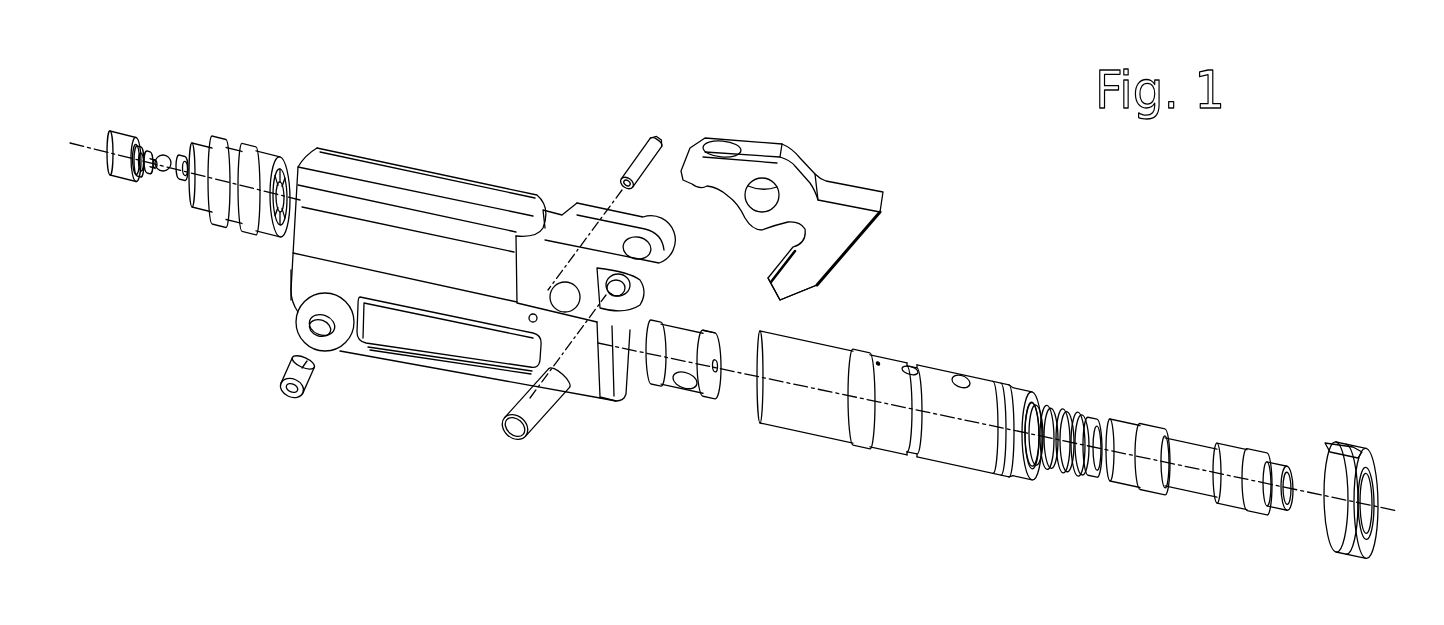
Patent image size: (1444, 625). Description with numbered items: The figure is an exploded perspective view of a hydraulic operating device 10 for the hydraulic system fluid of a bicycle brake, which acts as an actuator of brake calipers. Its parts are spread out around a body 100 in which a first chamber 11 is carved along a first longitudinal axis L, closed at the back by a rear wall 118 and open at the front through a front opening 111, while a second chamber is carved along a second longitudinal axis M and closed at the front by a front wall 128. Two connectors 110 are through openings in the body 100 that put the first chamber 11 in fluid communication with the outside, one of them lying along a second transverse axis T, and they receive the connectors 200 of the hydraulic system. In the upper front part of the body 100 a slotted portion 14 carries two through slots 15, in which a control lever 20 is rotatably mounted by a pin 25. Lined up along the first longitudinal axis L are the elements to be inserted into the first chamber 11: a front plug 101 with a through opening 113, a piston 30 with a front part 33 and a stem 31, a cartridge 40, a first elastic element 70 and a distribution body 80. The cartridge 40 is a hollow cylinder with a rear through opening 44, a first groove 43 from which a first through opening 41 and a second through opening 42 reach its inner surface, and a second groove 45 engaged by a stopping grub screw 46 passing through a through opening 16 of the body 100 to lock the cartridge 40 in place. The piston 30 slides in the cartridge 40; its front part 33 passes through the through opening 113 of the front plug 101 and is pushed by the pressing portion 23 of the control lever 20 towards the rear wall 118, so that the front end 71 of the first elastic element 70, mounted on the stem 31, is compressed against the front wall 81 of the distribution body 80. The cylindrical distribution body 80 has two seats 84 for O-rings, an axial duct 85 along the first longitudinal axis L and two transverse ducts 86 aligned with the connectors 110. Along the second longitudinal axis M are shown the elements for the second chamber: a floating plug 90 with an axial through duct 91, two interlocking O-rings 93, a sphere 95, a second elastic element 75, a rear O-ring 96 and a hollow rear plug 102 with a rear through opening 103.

The hydraulic operating device 10 is at (456, 86).
The first chamber 11 is at (620, 382).
The slotted portion 14 is at (632, 244).
The through slots 15 is at (641, 249).
The through opening 16 is at (531, 320).
The control lever 20 is at (797, 187).
The pressing portion 23 is at (795, 284).
The pin 25 is at (542, 415).
The piston 30 is at (1191, 440).
The stem 31 is at (1107, 436).
The front part 33 is at (1286, 474).
The cartridge 40 is at (889, 428).
The first through opening 41 is at (913, 368).
The second through opening 42 is at (879, 363).
The first groove 43 is at (893, 365).
The rear through opening 44 is at (758, 403).
The second groove 45 is at (957, 373).
The stopping grub screw 46 is at (637, 160).
The first elastic element 70 is at (1063, 475).
The front end 71 is at (1090, 473).
The second elastic element 75 is at (179, 181).
The distribution body 80 is at (675, 360).
The front wall 81 is at (725, 343).
The seats 84 is at (661, 390).
The axial duct 85 is at (722, 366).
The transverse ducts 86 is at (685, 393).
The floating plug 90 is at (251, 141).
The axial through duct 91 is at (283, 174).
The interlocking O-rings 93 is at (230, 160).
The sphere 95 is at (165, 157).
The rear O-ring 96 is at (152, 155).
The body 100 is at (405, 192).
The front plug 101 is at (1346, 447).
The rear plug 102 is at (122, 140).
The rear through opening 103 is at (137, 174).
The connectors 110 is at (320, 326).
The front opening 111 is at (609, 294).
The through opening 113 is at (1355, 493).
The rear wall 118 is at (288, 295).
The front wall 128 is at (552, 212).
The connectors 200 is at (308, 378).
The second longitudinal axis M is at (93, 148).
The second transverse axis T is at (291, 392).
The first longitudinal axis L is at (1388, 510).